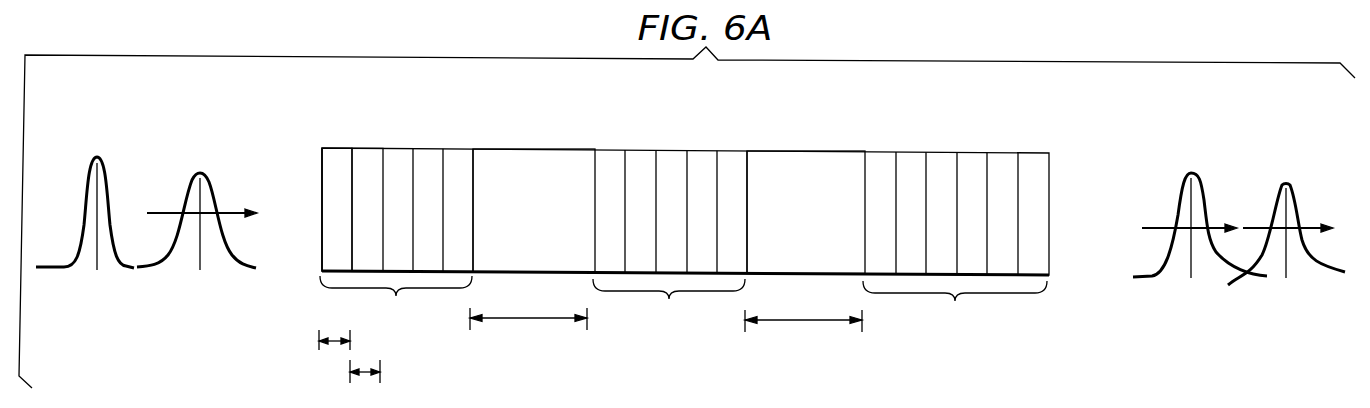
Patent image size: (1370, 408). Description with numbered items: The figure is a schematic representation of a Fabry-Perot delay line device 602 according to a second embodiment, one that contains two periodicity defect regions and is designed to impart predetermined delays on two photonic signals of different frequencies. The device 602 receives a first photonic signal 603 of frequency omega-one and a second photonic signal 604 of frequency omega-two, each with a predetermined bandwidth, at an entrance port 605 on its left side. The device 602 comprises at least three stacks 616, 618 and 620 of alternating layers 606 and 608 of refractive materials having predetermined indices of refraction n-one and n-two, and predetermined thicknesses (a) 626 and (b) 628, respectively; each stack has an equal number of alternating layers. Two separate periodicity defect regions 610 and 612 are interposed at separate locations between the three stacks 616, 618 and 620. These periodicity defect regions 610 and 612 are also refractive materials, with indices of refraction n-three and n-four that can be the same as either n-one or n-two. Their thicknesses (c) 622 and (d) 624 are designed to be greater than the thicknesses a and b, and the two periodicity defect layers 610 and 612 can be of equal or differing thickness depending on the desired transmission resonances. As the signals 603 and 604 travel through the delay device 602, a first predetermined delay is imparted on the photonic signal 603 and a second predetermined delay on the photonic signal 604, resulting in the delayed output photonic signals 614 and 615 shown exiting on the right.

The Fabry-Perot delay line device 602 is at (645, 172).
The photonic signal 603 is at (97, 155).
The photonic signal 604 is at (200, 170).
The entrance port 605 is at (321, 186).
The layer of refractive material 606 is at (332, 148).
The layer of refractive material 608 is at (366, 148).
The periodicity defect region 610 is at (510, 149).
The periodicity defect region 612 is at (798, 151).
The delayed output photonic signal 614 is at (1191, 170).
The delayed output photonic signal 615 is at (1286, 180).
The stack of alternating layers 616 is at (396, 303).
The stack of alternating layers 618 is at (669, 304).
The stack of alternating layers 620 is at (955, 306).
The thickness (c) 622 is at (540, 339).
The thickness (d) 624 is at (815, 341).
The thickness (a) 626 is at (322, 360).
The thickness (b) 628 is at (375, 393).